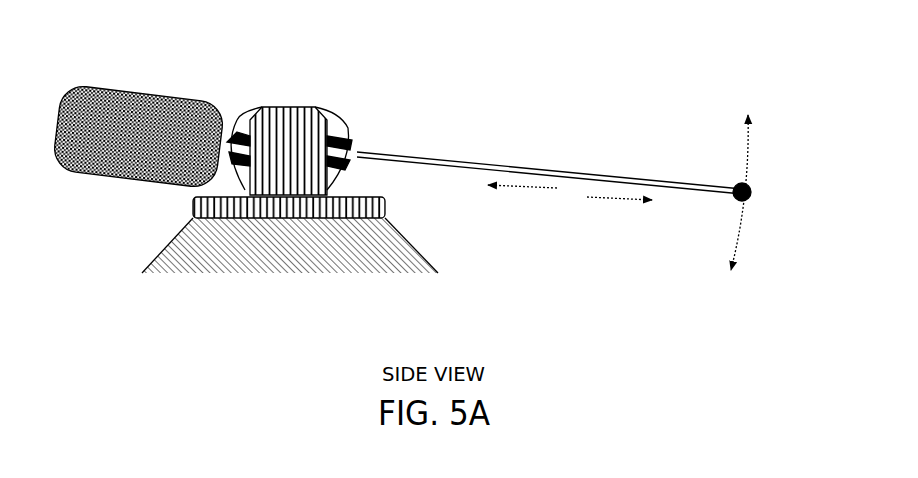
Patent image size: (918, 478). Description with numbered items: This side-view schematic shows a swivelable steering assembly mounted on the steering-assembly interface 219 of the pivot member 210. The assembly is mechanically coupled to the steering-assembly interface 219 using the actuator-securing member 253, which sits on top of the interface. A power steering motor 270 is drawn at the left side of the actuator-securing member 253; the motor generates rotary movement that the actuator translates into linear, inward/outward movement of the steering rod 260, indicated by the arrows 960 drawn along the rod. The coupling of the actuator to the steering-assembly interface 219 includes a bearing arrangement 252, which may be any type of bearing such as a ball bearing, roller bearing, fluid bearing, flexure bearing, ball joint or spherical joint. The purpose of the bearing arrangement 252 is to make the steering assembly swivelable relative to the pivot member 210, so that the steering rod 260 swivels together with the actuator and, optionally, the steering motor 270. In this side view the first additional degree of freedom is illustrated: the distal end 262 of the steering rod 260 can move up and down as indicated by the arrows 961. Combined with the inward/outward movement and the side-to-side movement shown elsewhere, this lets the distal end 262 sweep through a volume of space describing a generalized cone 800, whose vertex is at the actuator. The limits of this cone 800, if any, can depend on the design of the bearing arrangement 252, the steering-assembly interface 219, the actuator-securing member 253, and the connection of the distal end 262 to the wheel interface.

The power steering motor 270 is at (108, 82).
The actuator-securing member 253 is at (276, 105).
The bearing arrangement 252 is at (333, 126).
The steering rod 260 is at (456, 156).
The distal end 262 is at (734, 203).
The generalized cone 800 is at (693, 150).
The arrows 960 is at (597, 202).
The arrows 961 is at (752, 168).
The steering-assembly interface 219 is at (191, 210).
The pivot member 210 is at (197, 265).